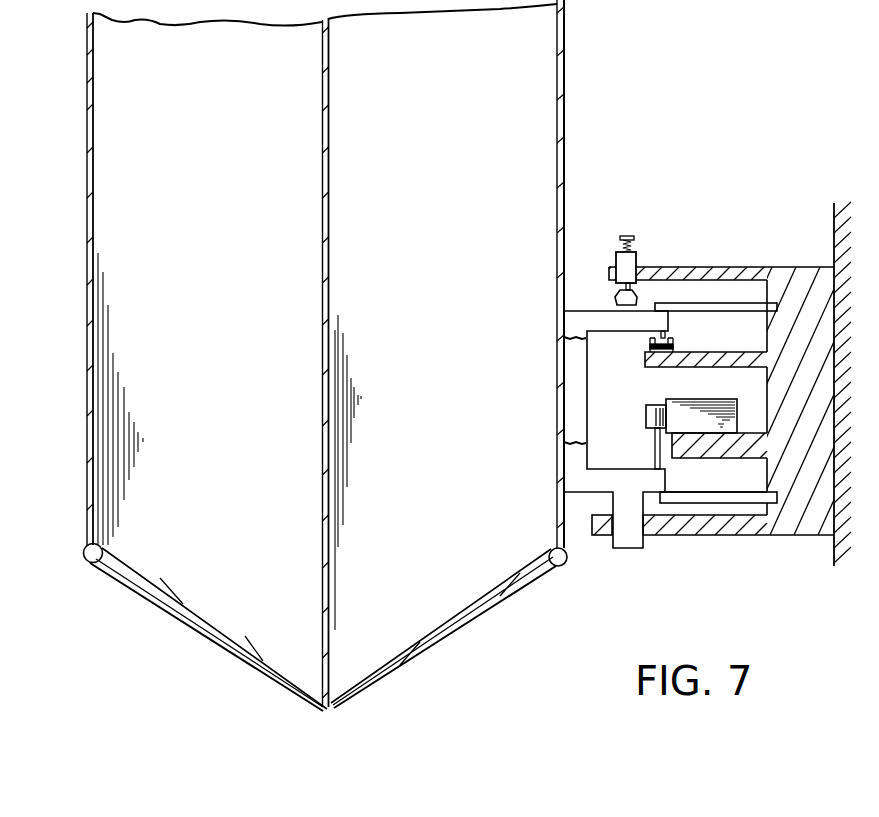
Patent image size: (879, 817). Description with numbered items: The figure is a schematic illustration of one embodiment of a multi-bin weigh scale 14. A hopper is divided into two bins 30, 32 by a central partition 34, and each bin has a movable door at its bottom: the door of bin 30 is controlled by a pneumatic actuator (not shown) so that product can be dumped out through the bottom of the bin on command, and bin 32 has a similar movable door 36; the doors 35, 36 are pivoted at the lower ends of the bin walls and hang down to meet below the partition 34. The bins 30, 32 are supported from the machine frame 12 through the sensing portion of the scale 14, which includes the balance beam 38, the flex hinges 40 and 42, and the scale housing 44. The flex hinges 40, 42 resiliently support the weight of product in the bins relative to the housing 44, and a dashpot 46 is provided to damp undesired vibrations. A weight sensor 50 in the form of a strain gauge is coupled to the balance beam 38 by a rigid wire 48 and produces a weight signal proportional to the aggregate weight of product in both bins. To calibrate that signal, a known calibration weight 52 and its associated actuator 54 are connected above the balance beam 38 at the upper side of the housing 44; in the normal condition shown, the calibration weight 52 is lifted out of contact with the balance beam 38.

The machine frame 12 is at (834, 218).
The weigh scale 14 is at (768, 131).
The bin 30 is at (550, 82).
The bin 32 is at (113, 113).
The central partition 34 is at (330, 113).
The hinged bottom flap 35 is at (463, 625).
The movable door 36 is at (157, 600).
The balance beam 38 is at (598, 312).
The flex hinge 40 is at (725, 493).
The flex hinge 42 is at (728, 302).
The scale housing 44 is at (790, 267).
The dashpot 46 is at (675, 345).
The rigid wire 48 is at (655, 452).
The weight sensor 50 is at (650, 410).
The calibration weight 52 is at (637, 298).
The actuator 54 is at (622, 255).